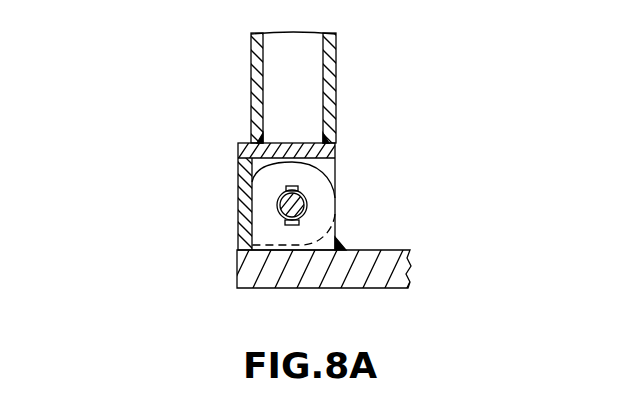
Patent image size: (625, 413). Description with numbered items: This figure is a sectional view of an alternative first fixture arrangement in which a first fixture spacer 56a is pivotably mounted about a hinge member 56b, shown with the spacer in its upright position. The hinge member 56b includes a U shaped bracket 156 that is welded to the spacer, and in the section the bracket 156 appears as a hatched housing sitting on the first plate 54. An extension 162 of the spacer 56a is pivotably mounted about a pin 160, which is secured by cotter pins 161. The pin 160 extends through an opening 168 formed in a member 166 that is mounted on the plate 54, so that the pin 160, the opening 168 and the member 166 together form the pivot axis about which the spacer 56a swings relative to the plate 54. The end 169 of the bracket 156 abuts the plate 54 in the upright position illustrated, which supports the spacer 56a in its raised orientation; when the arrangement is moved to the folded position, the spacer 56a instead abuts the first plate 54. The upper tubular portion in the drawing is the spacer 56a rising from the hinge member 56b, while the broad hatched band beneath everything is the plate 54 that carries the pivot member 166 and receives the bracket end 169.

The first fixture spacer 56a is at (257, 79).
The hinge member 56b is at (134, 195).
The U shaped bracket 156 is at (250, 208).
The extension 162 is at (328, 167).
The member 166 is at (315, 185).
The end of bracket 169 is at (250, 242).
The opening 168 is at (310, 196).
The pin 160 is at (307, 207).
The cotter pin 161 is at (288, 186).
The plate 54 is at (400, 253).